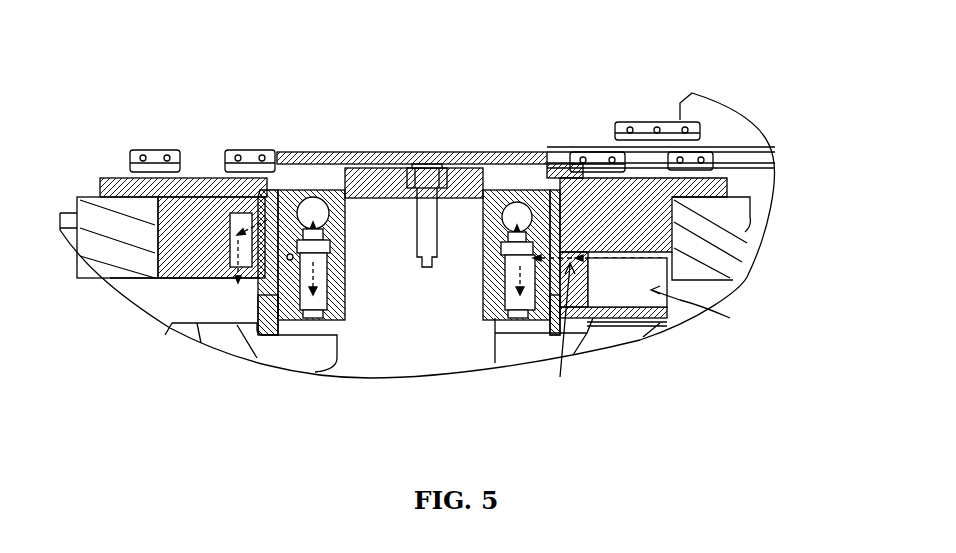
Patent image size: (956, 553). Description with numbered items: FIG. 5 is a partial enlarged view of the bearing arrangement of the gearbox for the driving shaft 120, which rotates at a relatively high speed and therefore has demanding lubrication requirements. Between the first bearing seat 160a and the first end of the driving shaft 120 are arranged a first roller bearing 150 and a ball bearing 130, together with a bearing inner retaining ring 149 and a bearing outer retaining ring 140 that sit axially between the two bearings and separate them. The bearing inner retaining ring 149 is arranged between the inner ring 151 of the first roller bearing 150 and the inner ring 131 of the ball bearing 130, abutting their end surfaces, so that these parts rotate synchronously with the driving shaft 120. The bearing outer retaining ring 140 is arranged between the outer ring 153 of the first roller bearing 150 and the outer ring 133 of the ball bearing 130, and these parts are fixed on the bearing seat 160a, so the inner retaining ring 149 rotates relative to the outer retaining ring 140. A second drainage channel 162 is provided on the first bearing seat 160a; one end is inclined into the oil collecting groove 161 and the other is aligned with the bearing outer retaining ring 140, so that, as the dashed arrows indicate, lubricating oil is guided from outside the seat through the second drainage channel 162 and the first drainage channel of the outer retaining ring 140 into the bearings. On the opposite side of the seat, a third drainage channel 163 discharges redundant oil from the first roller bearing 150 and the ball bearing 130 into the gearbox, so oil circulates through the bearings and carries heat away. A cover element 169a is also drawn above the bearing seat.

The driving shaft 120 is at (377, 366).
The ball bearing 130 is at (313, 210).
The inner ring of the ball bearing 131 is at (347, 222).
The outer ring of the ball bearing 133 is at (290, 188).
The bearing outer retaining ring 140 is at (536, 254).
The bearing inner retaining ring 149 is at (347, 250).
The first roller bearing 150 is at (310, 312).
The inner ring of the first roller bearing 151 is at (347, 296).
The outer ring of the first roller bearing 153 is at (277, 304).
The first bearing seat 160a is at (190, 188).
The oil collecting groove 161 is at (706, 304).
The second drainage channel 162 is at (604, 326).
The third drainage channel 163 is at (230, 245).
The cover plate 169a is at (387, 158).